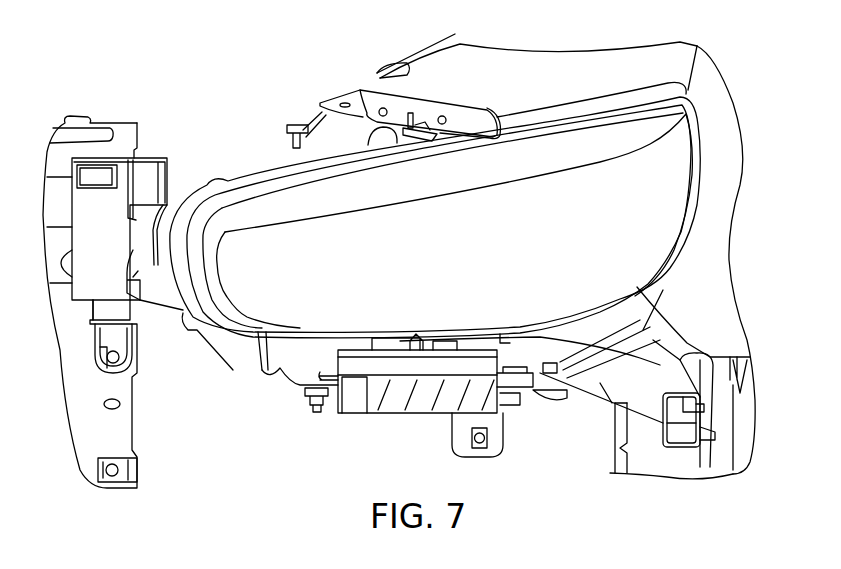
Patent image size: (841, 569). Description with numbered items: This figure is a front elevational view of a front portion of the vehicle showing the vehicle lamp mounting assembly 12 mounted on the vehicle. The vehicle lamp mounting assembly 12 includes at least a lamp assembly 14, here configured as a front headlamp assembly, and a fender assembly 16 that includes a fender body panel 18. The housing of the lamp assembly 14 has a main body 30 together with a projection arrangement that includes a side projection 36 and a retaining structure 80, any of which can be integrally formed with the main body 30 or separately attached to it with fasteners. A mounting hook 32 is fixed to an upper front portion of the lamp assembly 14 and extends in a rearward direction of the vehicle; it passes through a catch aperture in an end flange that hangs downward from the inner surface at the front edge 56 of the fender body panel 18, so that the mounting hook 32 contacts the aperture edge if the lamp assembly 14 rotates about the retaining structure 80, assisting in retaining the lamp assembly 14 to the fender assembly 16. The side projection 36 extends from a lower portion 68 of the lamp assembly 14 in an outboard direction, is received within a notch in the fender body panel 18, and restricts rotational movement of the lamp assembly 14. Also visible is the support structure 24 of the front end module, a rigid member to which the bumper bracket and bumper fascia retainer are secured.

The vehicle lamp mounting assembly 12 is at (172, 128).
The lamp assembly 14 is at (300, 293).
The fender assembly 16 is at (410, 80).
The fender body panel 18 is at (565, 75).
The support structure 24 is at (125, 122).
The main body 30 is at (262, 173).
The mounting hook 32 is at (421, 143).
The side projection 36 is at (715, 440).
The front edge 56 is at (462, 105).
The lower portion 68 is at (610, 380).
The retaining structure 80 is at (167, 183).